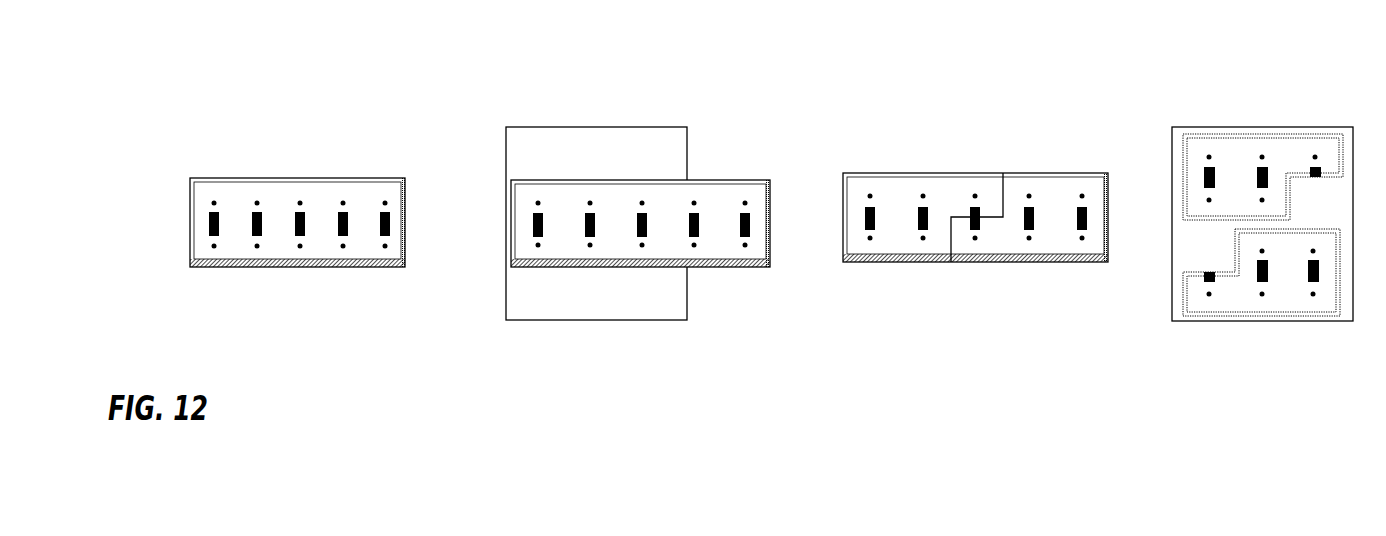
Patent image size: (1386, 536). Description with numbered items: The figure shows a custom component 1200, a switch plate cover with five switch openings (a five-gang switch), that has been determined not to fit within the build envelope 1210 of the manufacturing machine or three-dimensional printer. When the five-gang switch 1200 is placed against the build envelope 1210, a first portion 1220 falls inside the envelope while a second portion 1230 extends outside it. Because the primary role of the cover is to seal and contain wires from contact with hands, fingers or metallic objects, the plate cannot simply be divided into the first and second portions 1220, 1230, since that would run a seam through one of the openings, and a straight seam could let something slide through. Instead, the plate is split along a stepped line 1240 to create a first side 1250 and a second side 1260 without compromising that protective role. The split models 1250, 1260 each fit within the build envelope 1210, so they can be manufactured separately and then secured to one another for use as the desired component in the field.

The custom component 1200 is at (213, 268).
The build envelope 1210 is at (535, 320).
The first portion 1220 is at (582, 187).
The second portion 1230 is at (713, 177).
The stepped line 1240 is at (992, 218).
The first side 1250 is at (863, 263).
The second side 1260 is at (1060, 263).